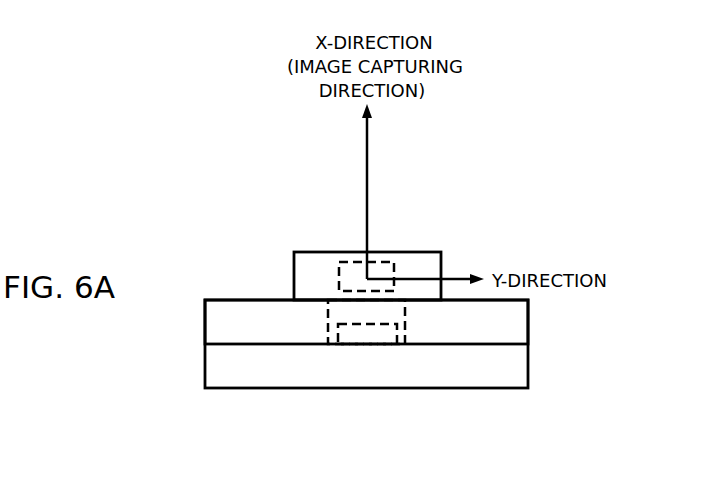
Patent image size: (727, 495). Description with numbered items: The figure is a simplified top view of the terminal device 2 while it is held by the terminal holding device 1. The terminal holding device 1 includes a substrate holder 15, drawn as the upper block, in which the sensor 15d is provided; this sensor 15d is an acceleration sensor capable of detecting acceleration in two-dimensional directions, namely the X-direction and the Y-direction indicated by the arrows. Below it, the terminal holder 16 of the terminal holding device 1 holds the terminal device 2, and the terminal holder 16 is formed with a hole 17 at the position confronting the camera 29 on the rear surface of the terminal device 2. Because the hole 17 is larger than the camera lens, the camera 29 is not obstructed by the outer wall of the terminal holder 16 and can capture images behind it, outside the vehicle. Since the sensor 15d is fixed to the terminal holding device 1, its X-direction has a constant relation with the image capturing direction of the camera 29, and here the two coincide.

The terminal holding device 1 is at (257, 268).
The terminal device 2 is at (512, 372).
The substrate holder 15 is at (422, 262).
The sensor 15d is at (346, 275).
The terminal holder 16 is at (510, 318).
The hole 17 is at (388, 308).
The camera 29 is at (362, 328).